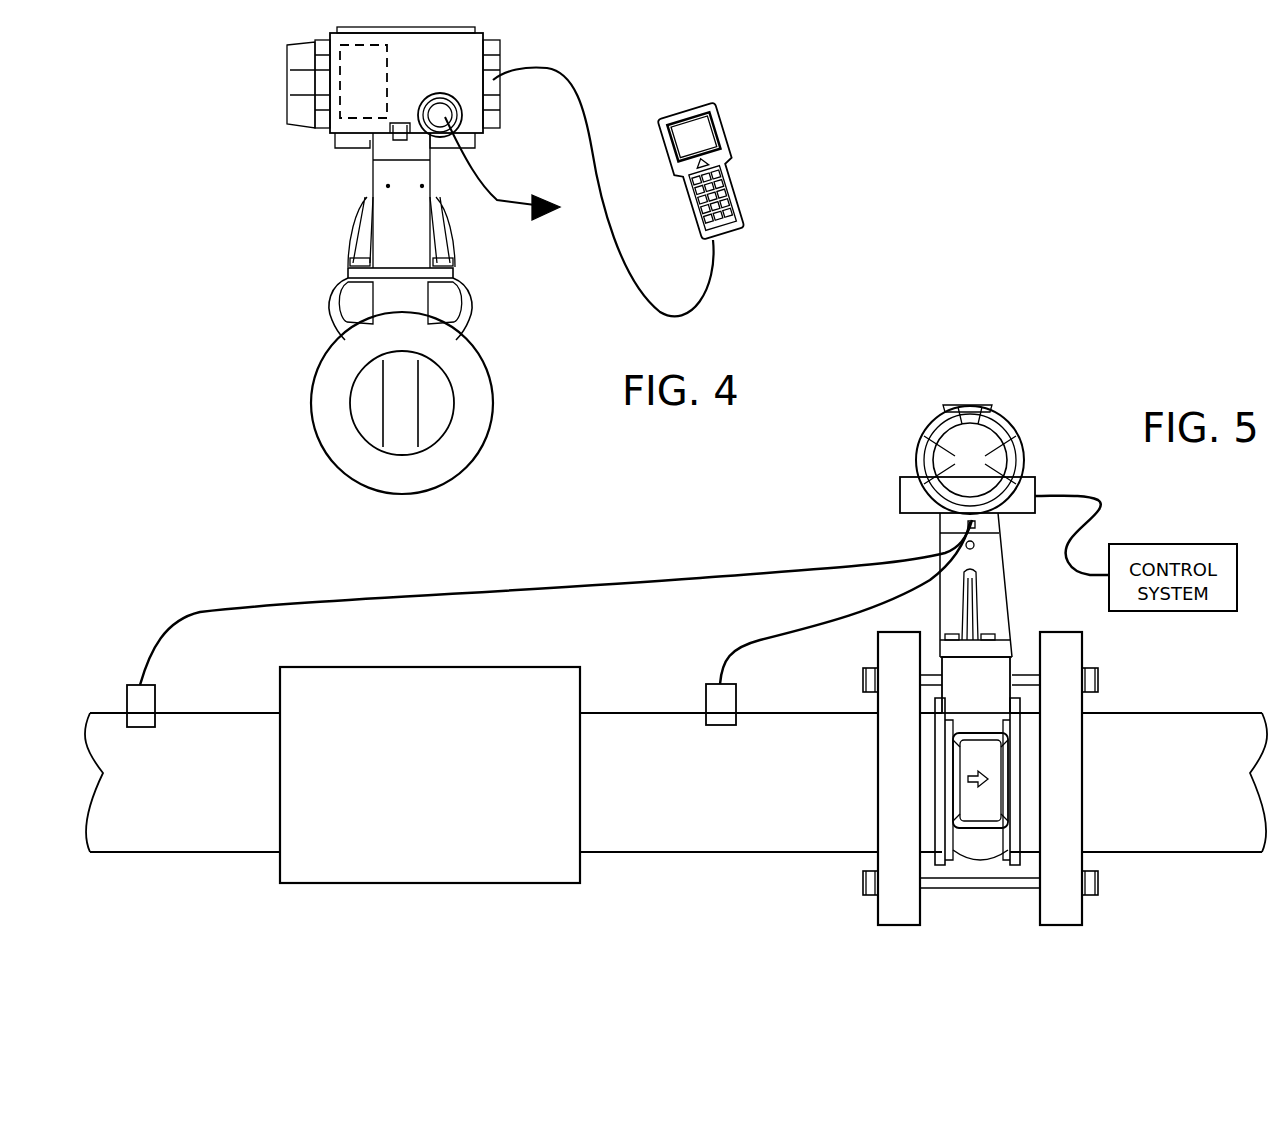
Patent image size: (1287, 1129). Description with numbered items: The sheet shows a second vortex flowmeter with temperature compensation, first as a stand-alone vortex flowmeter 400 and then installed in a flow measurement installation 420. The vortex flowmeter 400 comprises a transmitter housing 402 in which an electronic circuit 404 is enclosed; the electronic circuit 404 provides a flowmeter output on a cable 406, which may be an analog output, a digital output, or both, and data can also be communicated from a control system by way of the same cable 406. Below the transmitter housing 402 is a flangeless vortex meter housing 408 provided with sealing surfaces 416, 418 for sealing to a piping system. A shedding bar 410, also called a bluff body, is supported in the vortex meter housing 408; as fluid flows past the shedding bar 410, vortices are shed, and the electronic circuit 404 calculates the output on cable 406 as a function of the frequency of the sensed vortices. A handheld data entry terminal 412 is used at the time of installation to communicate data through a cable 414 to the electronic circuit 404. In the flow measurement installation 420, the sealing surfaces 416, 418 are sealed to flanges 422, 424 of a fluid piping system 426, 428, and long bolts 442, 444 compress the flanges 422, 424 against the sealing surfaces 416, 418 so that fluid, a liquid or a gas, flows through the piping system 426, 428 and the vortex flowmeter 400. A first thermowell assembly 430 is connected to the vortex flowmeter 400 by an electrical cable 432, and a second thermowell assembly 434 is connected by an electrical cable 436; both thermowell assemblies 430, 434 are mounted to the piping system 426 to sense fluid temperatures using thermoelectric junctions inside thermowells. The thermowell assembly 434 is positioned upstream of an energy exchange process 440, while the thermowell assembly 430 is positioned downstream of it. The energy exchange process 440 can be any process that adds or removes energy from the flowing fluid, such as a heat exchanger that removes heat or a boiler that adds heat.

In FIG. 4, the vortex flowmeter 400 is at (205, 145).
In FIG. 4, the transmitter housing 402 is at (332, 137).
In FIG. 5, the transmitter housing 402 is at (920, 470).
In FIG. 4, the electronic circuit 404 is at (292, 37).
In FIG. 4, the cable 406 is at (508, 203).
In FIG. 5, the cable 406 is at (1100, 510).
In FIG. 4, the flangeless vortex meter housing 408 is at (330, 352).
In FIG. 4, the shedding bar 410 is at (420, 402).
In FIG. 4, the handheld data entry terminal 412 is at (723, 107).
In FIG. 4, the cable 414 is at (587, 108).
In FIG. 4, the sealing surface 416 is at (328, 418).
In FIG. 5, the sealing surface 416 is at (1030, 855).
In FIG. 5, the sealing surface 418 is at (945, 778).
In FIG. 5, the flow measurement installation 420 is at (150, 596).
In FIG. 5, the flange 422 is at (876, 870).
In FIG. 5, the flange 424 is at (1084, 868).
In FIG. 5, the fluid piping system 426 is at (598, 855).
In FIG. 5, the fluid piping system 428 is at (1155, 708).
In FIG. 5, the first thermowell assembly 430 is at (708, 689).
In FIG. 5, the electrical cable 432 is at (780, 633).
In FIG. 5, the second thermowell assembly 434 is at (132, 683).
In FIG. 5, the electrical cable 436 is at (252, 602).
In FIG. 5, the energy exchange process 440 is at (455, 666).
In FIG. 5, the long bolt 442 is at (938, 888).
In FIG. 5, the long bolt 444 is at (1022, 675).